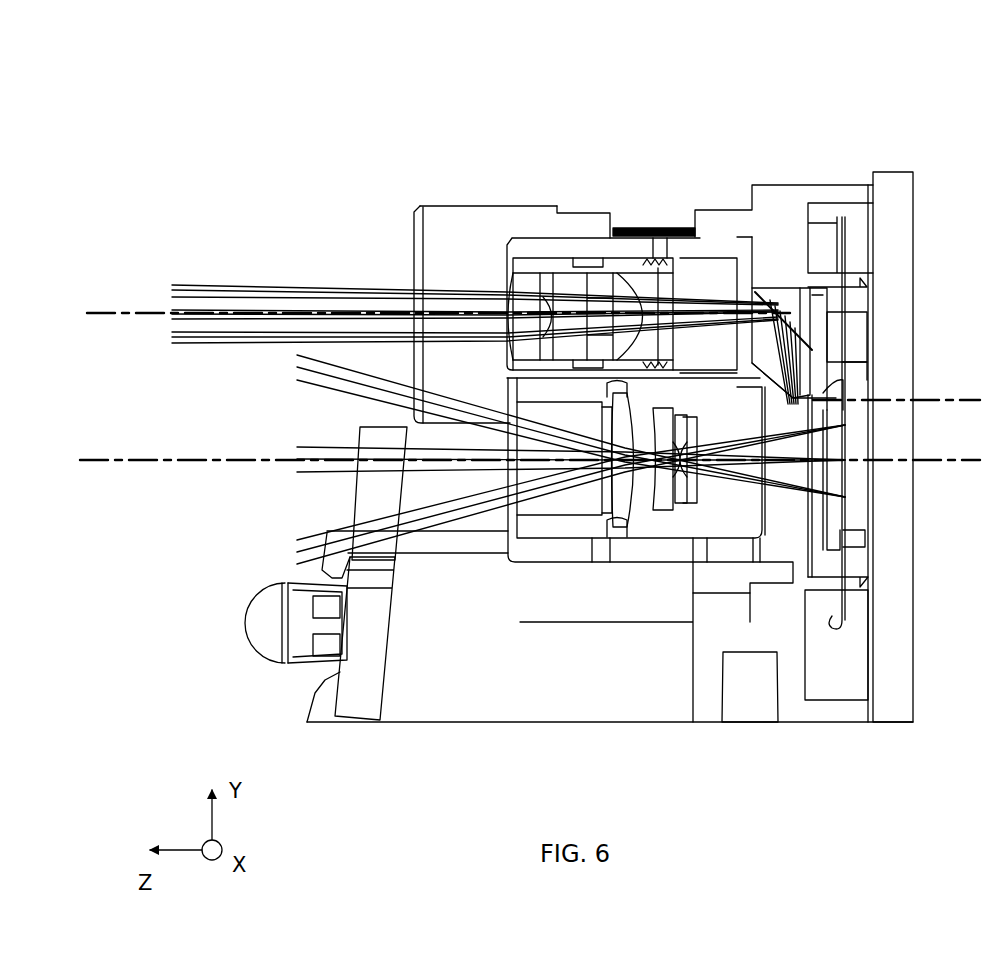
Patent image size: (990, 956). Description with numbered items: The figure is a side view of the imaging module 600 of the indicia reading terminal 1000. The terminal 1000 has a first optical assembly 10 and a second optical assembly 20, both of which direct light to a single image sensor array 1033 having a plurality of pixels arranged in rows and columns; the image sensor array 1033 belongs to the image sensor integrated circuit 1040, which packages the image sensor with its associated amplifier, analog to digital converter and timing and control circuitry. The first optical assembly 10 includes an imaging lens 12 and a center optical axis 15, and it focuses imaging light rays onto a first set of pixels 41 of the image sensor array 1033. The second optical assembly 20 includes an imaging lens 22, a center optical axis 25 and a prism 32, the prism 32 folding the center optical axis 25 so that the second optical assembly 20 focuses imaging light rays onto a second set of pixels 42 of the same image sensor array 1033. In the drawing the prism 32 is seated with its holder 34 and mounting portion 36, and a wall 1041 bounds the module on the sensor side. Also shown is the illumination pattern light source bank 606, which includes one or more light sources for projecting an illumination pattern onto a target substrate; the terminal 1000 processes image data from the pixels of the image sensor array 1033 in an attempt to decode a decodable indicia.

The indicia reading terminal 1000 is at (742, 78).
The imaging module 600 is at (790, 180).
The housing plate / side wall 1041 is at (840, 240).
The second optical assembly 20 is at (716, 272).
The imaging lens 22 is at (630, 275).
The prism 32 is at (762, 290).
The prism holder 34 is at (812, 328).
The prism mounting portion 36 is at (772, 385).
The second set of pixels 42 is at (825, 392).
The first set of pixels 41 is at (815, 463).
The image sensor integrated circuit 1040 is at (855, 509).
The image sensor array 1033 is at (822, 516).
The first optical assembly 10 is at (714, 522).
The imaging lens 12 is at (651, 512).
The center optical axis 25 is at (99, 316).
The center optical axis 15 is at (99, 463).
The illumination pattern light source bank 606 is at (240, 608).